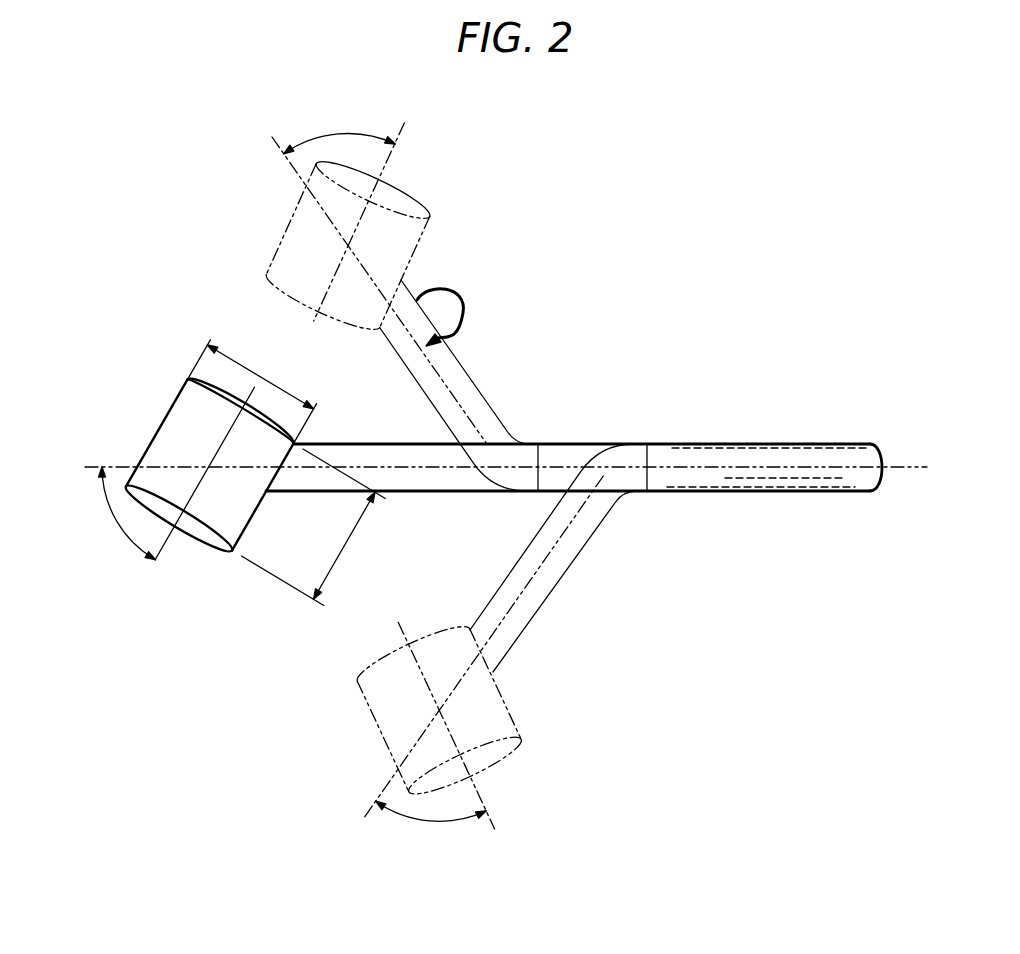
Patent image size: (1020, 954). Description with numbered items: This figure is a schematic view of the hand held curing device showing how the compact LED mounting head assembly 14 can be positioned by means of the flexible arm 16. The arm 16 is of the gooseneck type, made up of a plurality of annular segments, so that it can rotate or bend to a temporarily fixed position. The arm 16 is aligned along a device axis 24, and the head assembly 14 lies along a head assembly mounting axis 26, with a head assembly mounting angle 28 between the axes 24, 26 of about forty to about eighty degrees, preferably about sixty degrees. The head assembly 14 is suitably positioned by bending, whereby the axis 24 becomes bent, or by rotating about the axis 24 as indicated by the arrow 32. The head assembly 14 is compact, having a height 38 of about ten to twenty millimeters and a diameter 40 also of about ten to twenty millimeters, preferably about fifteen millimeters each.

The compact LED mounting head assembly 14 is at (428, 222).
The flexible arm 16 is at (528, 428).
The device axis 24 is at (276, 142).
The head assembly mounting axis 26 is at (391, 158).
The head assembly mounting angle 28 is at (346, 131).
The arrow 32 is at (461, 300).
The height 38 is at (341, 553).
The diameter 40 is at (294, 392).